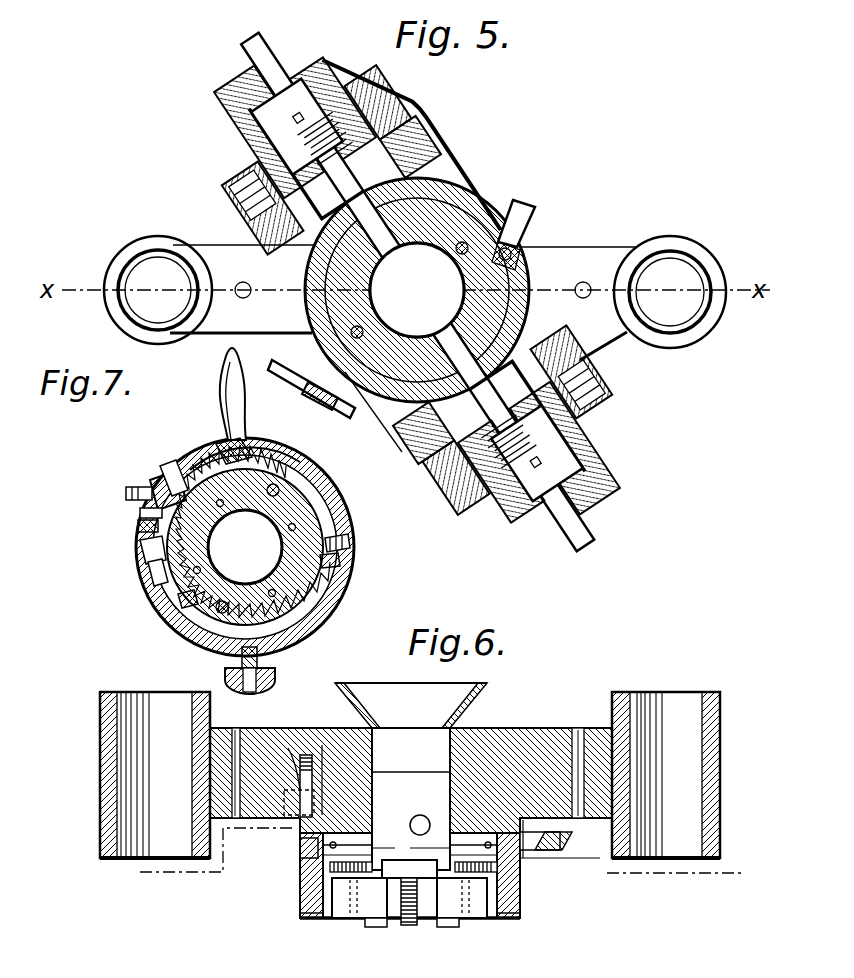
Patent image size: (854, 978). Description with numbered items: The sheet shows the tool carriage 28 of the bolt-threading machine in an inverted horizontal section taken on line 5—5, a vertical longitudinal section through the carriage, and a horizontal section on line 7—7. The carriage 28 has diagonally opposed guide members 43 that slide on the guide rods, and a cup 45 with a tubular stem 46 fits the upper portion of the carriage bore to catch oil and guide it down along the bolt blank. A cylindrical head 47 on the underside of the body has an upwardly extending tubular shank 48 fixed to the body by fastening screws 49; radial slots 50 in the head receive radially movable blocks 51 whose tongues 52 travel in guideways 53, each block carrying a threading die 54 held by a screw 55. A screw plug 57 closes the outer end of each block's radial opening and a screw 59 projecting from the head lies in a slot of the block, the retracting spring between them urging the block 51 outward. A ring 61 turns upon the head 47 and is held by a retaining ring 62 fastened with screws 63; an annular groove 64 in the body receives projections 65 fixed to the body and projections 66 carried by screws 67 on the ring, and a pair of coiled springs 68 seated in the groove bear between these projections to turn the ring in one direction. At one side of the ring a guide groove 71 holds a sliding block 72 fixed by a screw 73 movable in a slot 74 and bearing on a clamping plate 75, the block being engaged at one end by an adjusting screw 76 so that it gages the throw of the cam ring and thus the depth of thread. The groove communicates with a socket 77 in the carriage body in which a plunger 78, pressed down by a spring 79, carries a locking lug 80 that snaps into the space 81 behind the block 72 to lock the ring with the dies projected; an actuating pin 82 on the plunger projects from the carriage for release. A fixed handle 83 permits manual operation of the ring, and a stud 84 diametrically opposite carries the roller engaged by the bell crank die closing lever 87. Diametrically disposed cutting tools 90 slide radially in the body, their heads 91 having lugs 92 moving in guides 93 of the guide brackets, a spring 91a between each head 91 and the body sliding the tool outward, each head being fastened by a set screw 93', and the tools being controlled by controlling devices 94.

In FIG. 6, the section line 5— 5 is at (442, 883).
In FIG. 6, the section line 7— 7 is at (300, 862).
In FIG. 5, the carriage 28 is at (440, 168).
In FIG. 5, the guide members 43 is at (180, 240).
In FIG. 6, the guide members 43 is at (104, 745).
In FIG. 6, the cup 45 is at (468, 700).
In FIG. 6, the tubular stem 46 is at (411, 799).
In FIG. 5, the head 47 is at (417, 315).
In FIG. 7, the head 47 is at (245, 548).
In FIG. 6, the head 47 is at (300, 860).
In FIG. 6, the tubular shank 48 is at (470, 748).
In FIG. 6, the fastening screws 49 is at (411, 810).
In FIG. 6, the radial slots 50 is at (409, 926).
In FIG. 6, the radially movable blocks 51 is at (305, 905).
In FIG. 6, the tongues 52 is at (420, 815).
In FIG. 6, the guideways 53 is at (330, 884).
In FIG. 6, the threading die 54 is at (455, 926).
In FIG. 6, the screw 55 is at (356, 926).
In FIG. 6, the screw plug 57 is at (535, 870).
In FIG. 6, the screw 59 is at (560, 855).
In FIG. 7, the ring 61 is at (338, 592).
In FIG. 6, the ring 61 is at (325, 866).
In FIG. 6, the retaining ring 62 is at (318, 926).
In FIG. 6, the screws 63 is at (312, 920).
In FIG. 7, the annular groove 64 is at (330, 517).
In FIG. 7, the projections 65 is at (322, 472).
In FIG. 7, the projections 66 is at (340, 538).
In FIG. 7, the screws 67 is at (350, 544).
In FIG. 7, the coiled springs 68 is at (256, 452).
In FIG. 7, the guide groove 71 is at (166, 472).
In FIG. 7, the block 72 is at (152, 482).
In FIG. 7, the screw 73 is at (126, 494).
In FIG. 7, the slot 74 is at (138, 526).
In FIG. 7, the clamping plate 75 is at (140, 512).
In FIG. 7, the adjusting screw 76 is at (214, 450).
In FIG. 6, the socket 77 is at (322, 745).
In FIG. 6, the plunger 78 is at (292, 745).
In FIG. 6, the spring 79 is at (306, 756).
In FIG. 6, the locking lug 80 is at (229, 845).
In FIG. 7, the space 81 is at (142, 548).
In FIG. 5, the actuating pin 82 is at (533, 220).
In FIG. 7, the handle 83 is at (226, 380).
In FIG. 7, the stud 84 is at (270, 660).
In FIG. 5, the bell crank die closing lever 87 is at (298, 362).
In FIG. 5, the cutting tools 90 is at (463, 190).
In FIG. 5, the heads 91 is at (337, 100).
In FIG. 5, the spring 91a is at (357, 112).
In FIG. 5, the lugs 92 is at (300, 147).
In FIG. 5, the guides 93 is at (418, 289).
In FIG. 5, the set screw 93' is at (389, 313).
In FIG. 5, the controlling devices 94 is at (295, 118).